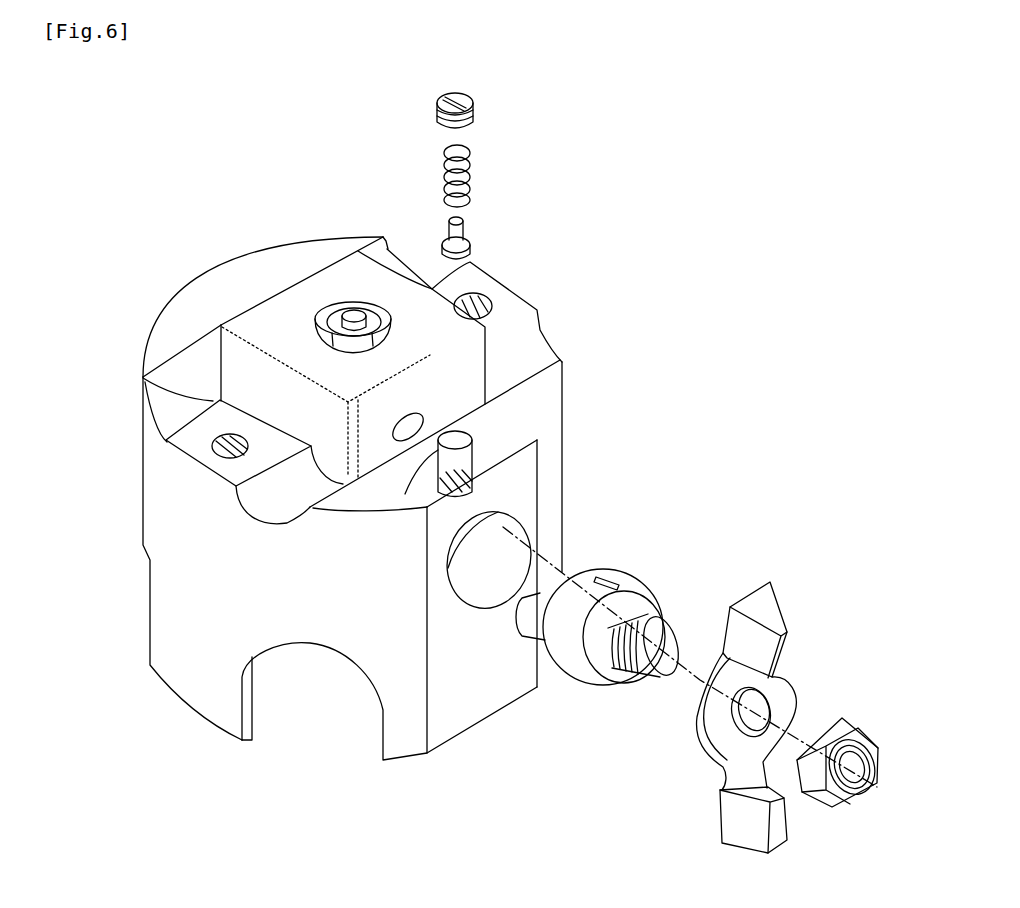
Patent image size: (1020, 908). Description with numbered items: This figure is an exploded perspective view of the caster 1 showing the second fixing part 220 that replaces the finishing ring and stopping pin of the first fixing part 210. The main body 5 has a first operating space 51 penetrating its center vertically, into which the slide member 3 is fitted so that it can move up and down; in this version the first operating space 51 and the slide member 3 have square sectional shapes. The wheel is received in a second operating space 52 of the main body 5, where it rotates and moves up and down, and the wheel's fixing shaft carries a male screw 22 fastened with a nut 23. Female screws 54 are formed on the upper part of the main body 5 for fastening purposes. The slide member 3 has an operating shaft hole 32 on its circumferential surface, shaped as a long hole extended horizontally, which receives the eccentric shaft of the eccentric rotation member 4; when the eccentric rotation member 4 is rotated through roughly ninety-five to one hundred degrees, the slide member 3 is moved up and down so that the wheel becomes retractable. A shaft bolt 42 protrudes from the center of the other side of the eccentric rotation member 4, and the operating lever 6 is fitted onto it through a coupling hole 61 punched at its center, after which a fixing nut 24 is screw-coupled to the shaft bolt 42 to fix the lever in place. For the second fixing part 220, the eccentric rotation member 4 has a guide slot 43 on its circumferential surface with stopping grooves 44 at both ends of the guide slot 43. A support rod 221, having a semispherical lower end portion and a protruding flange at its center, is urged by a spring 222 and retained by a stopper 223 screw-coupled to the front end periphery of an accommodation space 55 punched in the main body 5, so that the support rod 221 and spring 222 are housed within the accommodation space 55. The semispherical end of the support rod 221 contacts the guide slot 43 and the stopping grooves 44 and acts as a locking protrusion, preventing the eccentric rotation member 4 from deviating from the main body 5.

The caster 1 is at (615, 368).
The slide member 3 is at (346, 370).
The eccentric rotation member 4 is at (603, 663).
The main body 5 is at (366, 505).
The operating lever 6 is at (778, 710).
The male screw 22 is at (354, 311).
The nut 23 is at (345, 268).
The fixing nut 24 is at (823, 807).
The operating shaft hole 32 is at (393, 432).
The shaft bolt 42 is at (483, 577).
The guide slot 43 is at (627, 577).
The stopping grooves 44 is at (597, 580).
The first operating space 51 is at (199, 449).
The second operating space 52 is at (317, 690).
The female screws 54 is at (212, 446).
The accommodation space 55 is at (432, 475).
The coupling hole 61 is at (780, 700).
The first fixing part 210 is at (557, 523).
The second fixing part 220 is at (561, 176).
The support rod 221 is at (522, 238).
The spring 222 is at (472, 170).
The stopper 223 is at (475, 106).